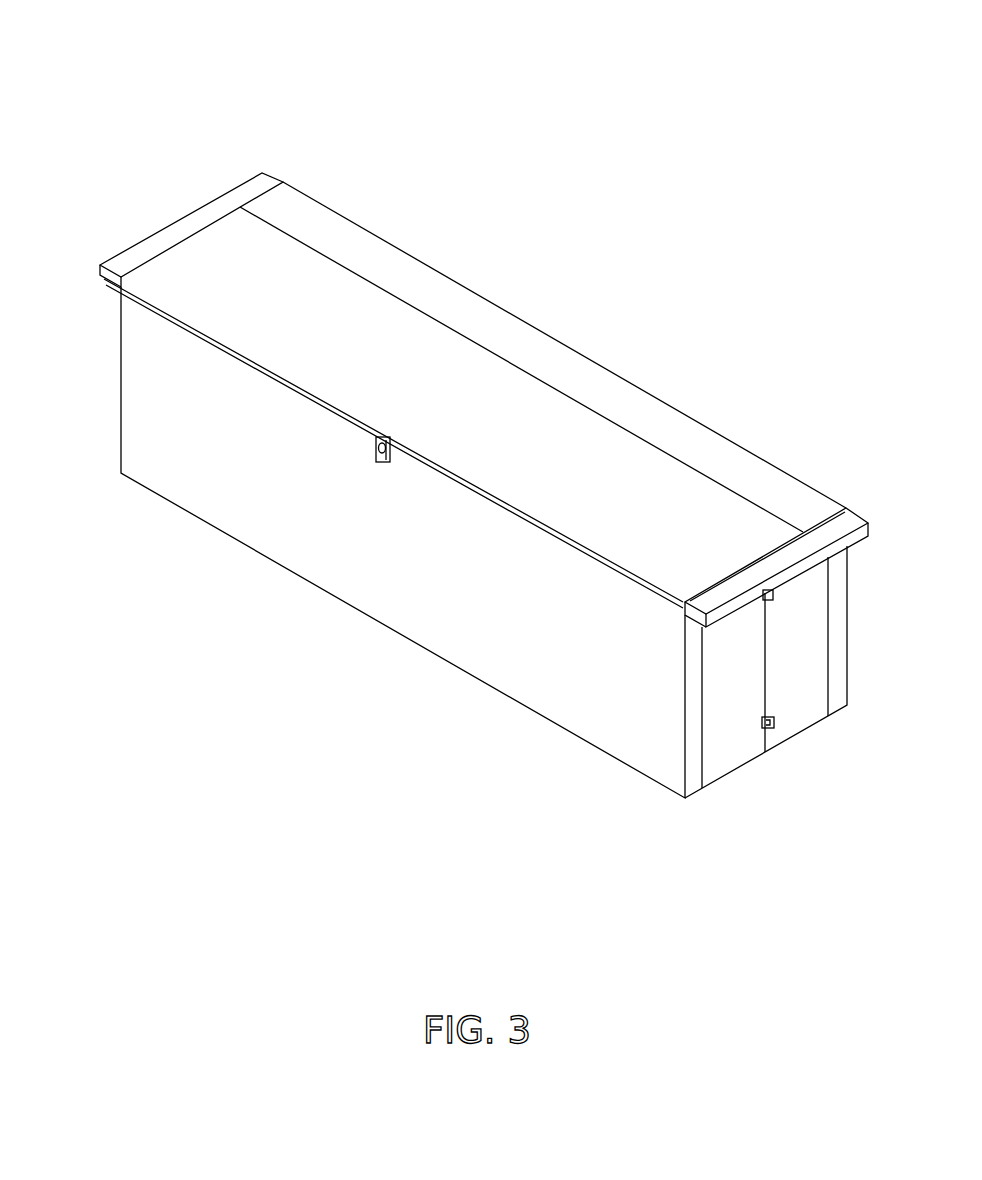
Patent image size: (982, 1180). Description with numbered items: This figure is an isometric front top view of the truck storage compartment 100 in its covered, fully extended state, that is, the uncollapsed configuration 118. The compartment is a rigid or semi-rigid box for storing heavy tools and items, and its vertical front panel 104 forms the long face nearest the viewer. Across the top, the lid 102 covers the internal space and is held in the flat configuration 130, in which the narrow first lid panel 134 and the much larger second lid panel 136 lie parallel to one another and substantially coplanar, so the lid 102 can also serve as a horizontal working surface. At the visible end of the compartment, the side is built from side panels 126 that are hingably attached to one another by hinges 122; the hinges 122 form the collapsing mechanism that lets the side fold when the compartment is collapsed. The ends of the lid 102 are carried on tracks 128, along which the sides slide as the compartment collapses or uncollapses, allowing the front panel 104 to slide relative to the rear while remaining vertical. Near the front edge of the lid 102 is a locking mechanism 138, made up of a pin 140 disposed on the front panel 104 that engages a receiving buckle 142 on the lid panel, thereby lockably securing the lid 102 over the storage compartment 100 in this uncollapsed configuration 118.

The storage compartment 100 is at (461, 415).
The lid 102 is at (475, 380).
The front panel 104 is at (471, 551).
The uncollapsed configuration 118 is at (455, 419).
The hinges 122 is at (771, 597).
The side panels 126 is at (782, 680).
The tracks 128 is at (100, 280).
The flat configuration 130 is at (293, 322).
The first lid panel 134 is at (563, 350).
The second lid panel 136 is at (510, 465).
The locking mechanism 138 is at (377, 472).
The pins 140 is at (377, 445).
The receiving buckles 142 is at (390, 460).